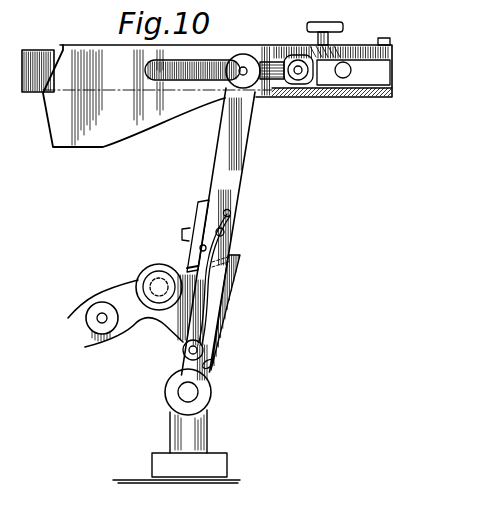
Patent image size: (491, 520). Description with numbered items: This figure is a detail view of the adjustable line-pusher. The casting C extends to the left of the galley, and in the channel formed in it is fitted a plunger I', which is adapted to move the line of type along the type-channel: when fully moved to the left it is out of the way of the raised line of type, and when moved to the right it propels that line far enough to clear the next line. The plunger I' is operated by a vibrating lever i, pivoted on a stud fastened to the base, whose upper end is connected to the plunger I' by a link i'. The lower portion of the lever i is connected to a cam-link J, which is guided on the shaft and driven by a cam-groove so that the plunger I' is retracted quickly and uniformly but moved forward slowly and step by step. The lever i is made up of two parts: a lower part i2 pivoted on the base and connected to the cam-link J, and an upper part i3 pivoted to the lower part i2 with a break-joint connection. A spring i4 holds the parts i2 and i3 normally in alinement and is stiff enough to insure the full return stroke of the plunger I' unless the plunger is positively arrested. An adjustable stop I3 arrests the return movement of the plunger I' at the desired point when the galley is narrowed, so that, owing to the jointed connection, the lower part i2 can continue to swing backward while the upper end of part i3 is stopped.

The casting C is at (217, 96).
The plunger I' is at (38, 60).
The adjustable stop I3 is at (337, 53).
The link i' is at (301, 53).
The vibrating lever i is at (186, 268).
The lower part of lever i2 is at (233, 300).
The upper part of lever i3 is at (222, 163).
The spring i4 is at (213, 250).
The cam-link J is at (135, 284).